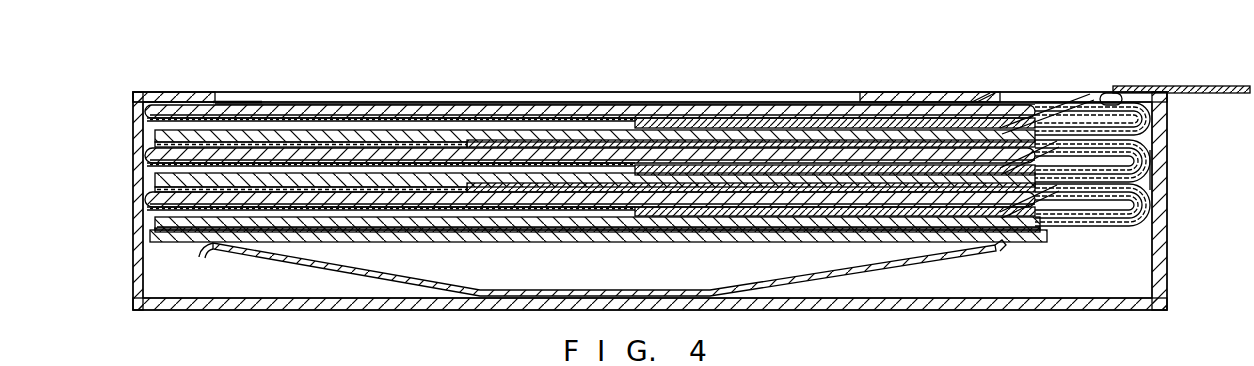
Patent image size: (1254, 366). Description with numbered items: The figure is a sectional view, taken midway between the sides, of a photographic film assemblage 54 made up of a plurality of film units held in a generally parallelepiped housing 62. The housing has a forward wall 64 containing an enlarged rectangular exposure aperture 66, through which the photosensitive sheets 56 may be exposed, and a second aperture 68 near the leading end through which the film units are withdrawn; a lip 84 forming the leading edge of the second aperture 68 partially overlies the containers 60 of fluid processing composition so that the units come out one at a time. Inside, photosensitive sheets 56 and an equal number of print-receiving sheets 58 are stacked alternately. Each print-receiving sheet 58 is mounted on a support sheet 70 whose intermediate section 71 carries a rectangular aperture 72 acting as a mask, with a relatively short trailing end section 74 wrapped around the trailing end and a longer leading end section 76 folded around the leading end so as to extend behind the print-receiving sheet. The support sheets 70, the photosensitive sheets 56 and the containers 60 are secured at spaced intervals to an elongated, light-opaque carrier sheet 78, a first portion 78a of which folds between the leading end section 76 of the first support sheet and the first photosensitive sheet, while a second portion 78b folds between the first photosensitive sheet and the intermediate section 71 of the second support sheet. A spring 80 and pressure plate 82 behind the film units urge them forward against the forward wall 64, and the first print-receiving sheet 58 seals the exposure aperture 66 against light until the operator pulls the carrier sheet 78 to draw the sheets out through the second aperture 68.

The film assemblage 54 is at (891, 312).
The photosensitive sheet 56 is at (285, 153).
The print-receiving sheet 58 is at (315, 197).
The container of fluid processing composition 60 is at (1147, 146).
The housing 62 is at (132, 259).
The forward wall 64 is at (163, 92).
The exposure aperture 66 is at (214, 102).
The second aperture 68 is at (980, 97).
The support sheet 70 is at (155, 126).
The intermediate section 71 is at (173, 107).
The rectangular aperture 72 is at (276, 221).
The trailing end section 74 is at (983, 217).
The leading end section 76 is at (555, 205).
The carrier sheet 78 is at (1190, 87).
The first portion of carrier sheet 78a is at (680, 211).
The second portion of carrier sheet 78b is at (508, 186).
The spring 80 is at (310, 260).
The pressure plate 82 is at (482, 241).
The lip 84 is at (1115, 93).